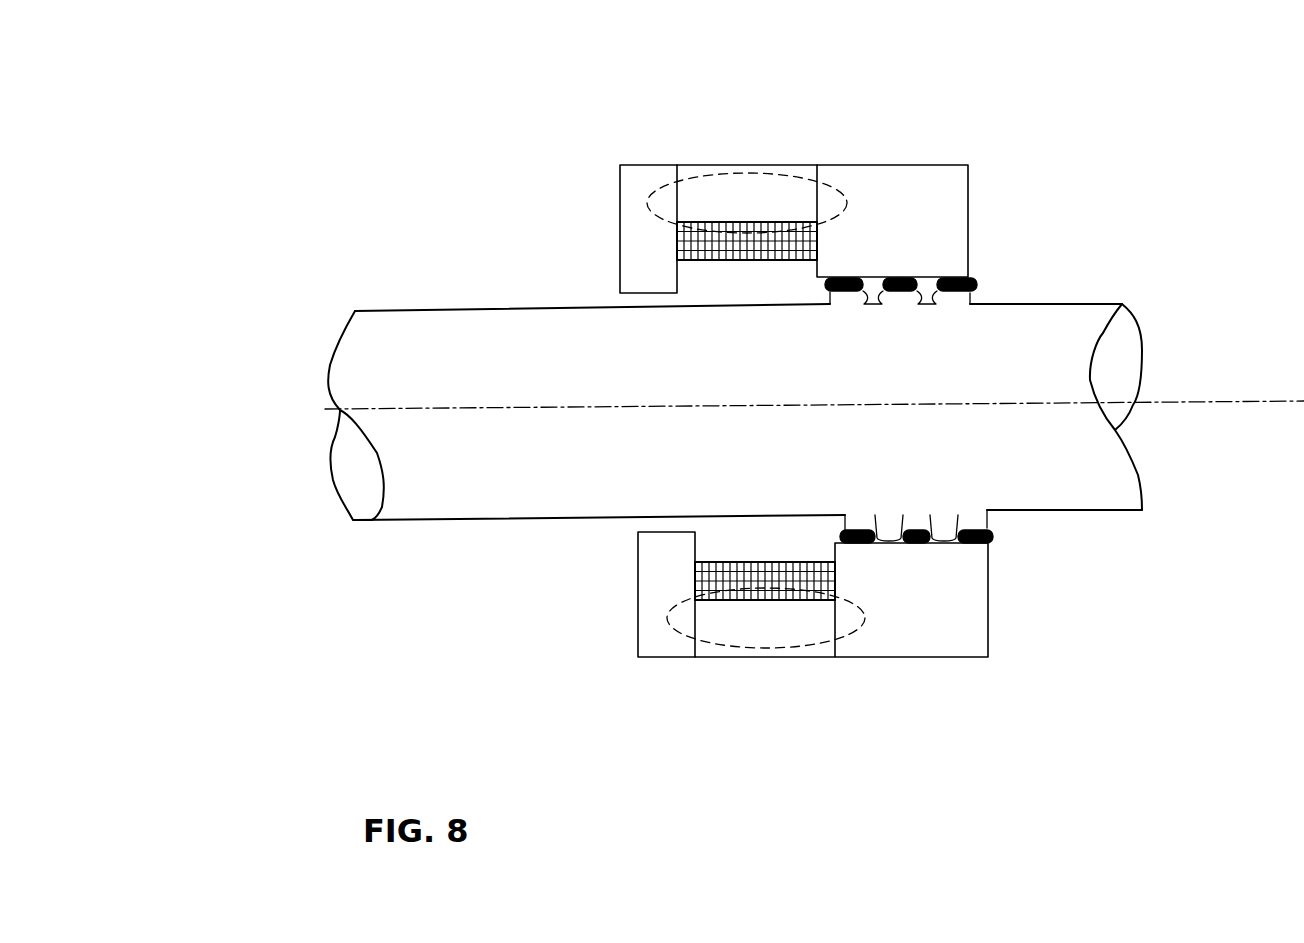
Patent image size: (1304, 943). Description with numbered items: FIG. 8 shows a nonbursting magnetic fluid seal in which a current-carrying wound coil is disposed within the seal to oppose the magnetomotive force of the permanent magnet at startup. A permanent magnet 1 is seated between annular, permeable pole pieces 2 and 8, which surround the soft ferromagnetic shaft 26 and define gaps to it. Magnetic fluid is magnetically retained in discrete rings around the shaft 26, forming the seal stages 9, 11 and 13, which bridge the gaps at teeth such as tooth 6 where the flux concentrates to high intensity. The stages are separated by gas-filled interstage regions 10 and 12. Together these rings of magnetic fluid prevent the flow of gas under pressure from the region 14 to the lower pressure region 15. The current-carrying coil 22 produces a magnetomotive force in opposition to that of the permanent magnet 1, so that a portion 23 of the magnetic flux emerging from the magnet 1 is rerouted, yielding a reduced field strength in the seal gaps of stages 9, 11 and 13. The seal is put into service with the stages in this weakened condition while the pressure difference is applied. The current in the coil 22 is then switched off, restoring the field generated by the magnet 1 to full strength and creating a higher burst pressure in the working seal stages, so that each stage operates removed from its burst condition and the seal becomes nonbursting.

The permanent magnet 1 is at (745, 165).
The pole piece 2 is at (620, 207).
The tooth 6 is at (972, 298).
The pole piece 8 is at (900, 162).
The ring of magnetic fluid 9 is at (993, 537).
The interstage region 10 is at (945, 530).
The ring of magnetic fluid 11 is at (870, 545).
The interstage region 12 is at (890, 530).
The ring of magnetic fluid 13 is at (925, 545).
The region 14 is at (743, 594).
The lower pressure region 15 is at (1108, 244).
The current-carrying coil 22 is at (678, 250).
The portion of magnetic flux 23 is at (715, 180).
The shaft 26 is at (482, 307).